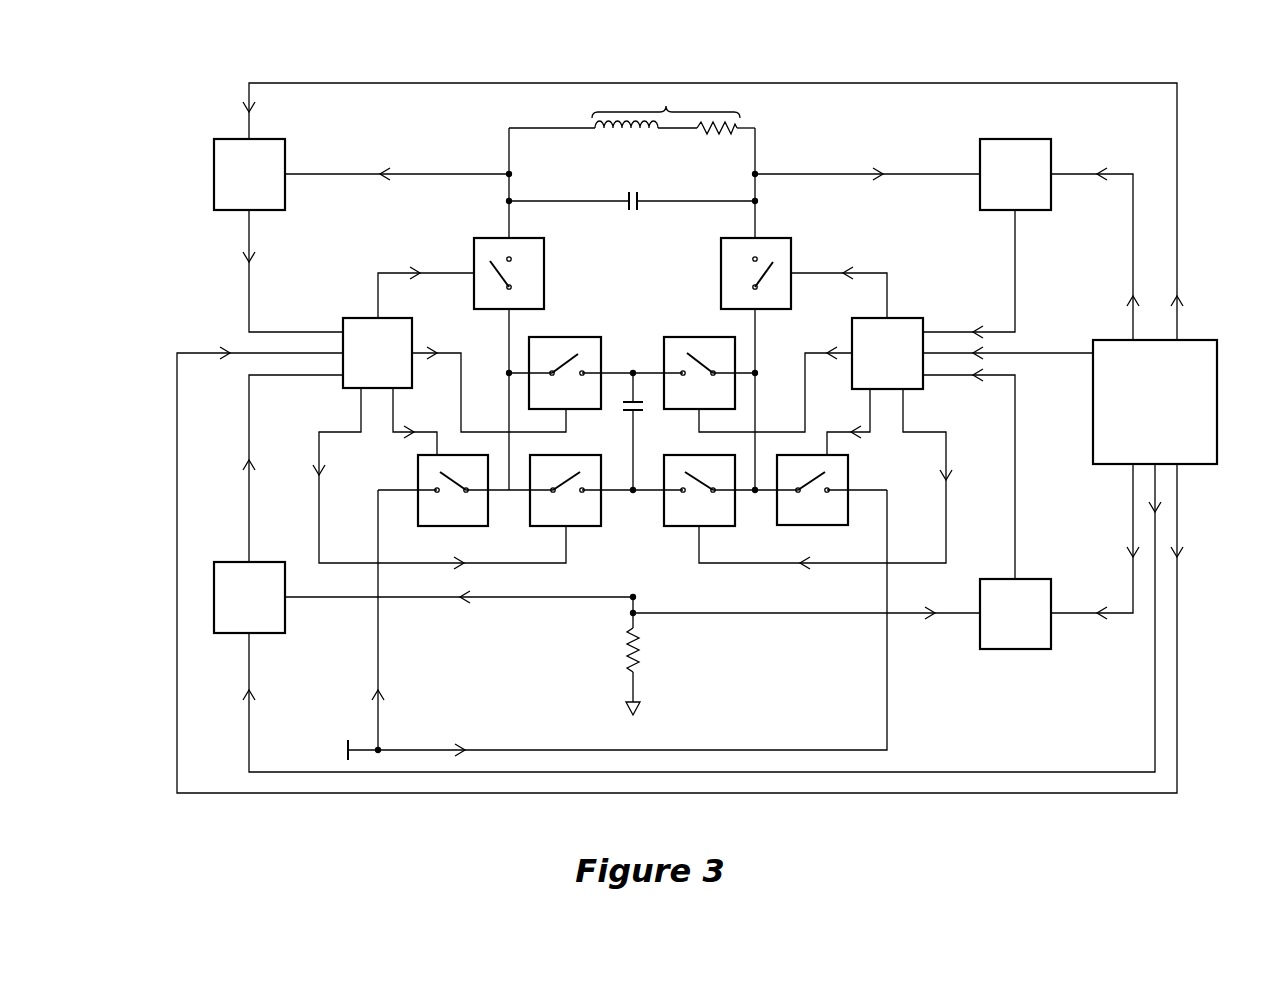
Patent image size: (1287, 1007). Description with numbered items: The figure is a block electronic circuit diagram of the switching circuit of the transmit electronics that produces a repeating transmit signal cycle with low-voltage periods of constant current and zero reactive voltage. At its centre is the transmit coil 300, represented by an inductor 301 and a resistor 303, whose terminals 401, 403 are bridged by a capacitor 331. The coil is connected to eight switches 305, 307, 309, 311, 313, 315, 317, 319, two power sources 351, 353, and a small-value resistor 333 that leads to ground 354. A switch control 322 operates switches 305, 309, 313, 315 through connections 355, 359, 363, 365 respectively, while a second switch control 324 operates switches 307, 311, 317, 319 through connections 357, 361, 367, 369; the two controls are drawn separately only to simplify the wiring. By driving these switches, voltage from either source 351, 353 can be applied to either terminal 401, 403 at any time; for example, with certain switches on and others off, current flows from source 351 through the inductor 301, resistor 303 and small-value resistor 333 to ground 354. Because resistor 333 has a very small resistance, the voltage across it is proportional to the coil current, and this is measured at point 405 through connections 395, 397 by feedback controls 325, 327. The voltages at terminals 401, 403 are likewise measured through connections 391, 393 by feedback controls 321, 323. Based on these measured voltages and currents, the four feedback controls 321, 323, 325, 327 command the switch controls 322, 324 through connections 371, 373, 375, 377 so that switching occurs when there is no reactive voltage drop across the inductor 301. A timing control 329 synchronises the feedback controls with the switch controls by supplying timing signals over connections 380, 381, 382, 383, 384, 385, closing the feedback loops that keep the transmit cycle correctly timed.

The transmit coil 300 is at (666, 106).
The inductor 301 is at (600, 134).
The resistor 303 is at (712, 134).
The switch 305 is at (544, 270).
The switch 307 is at (721, 262).
The switch 309 is at (546, 400).
The switch 311 is at (680, 400).
The switch 313 is at (434, 518).
The switch 315 is at (547, 518).
The switch 317 is at (680, 518).
The switch 319 is at (793, 518).
The feedback control 321 is at (230, 187).
The switch control 322 is at (358, 366).
The feedback control 323 is at (996, 187).
The switch control 324 is at (868, 366).
The feedback control 325 is at (230, 610).
The feedback control 327 is at (996, 626).
The timing control 329 is at (1136, 415).
The capacitor 331 is at (633, 206).
The small-value resistor 333 is at (640, 650).
The power source 351 is at (626, 404).
The power source 353 is at (346, 748).
The ground 354 is at (640, 712).
The connection 355 is at (400, 273).
The connection 357 is at (887, 292).
The connection 359 is at (450, 352).
The connection 361 is at (807, 352).
The connection 363 is at (398, 432).
The connection 365 is at (319, 455).
The connection 367 is at (790, 563).
The connection 369 is at (862, 432).
The connection 371 is at (249, 290).
The connection 373 is at (1015, 290).
The connection 375 is at (249, 452).
The connection 377 is at (1015, 445).
The connection 380 is at (1035, 353).
The connection 381 is at (195, 353).
The connection 382 is at (1133, 598).
The connection 383 is at (1155, 532).
The connection 384 is at (1133, 285).
The connection 385 is at (1177, 285).
The connection 391 is at (405, 173).
The connection 393 is at (870, 173).
The connection 395 is at (498, 600).
The connection 397 is at (795, 614).
The terminal 401 is at (509, 172).
The terminal 403 is at (755, 172).
The point 405 is at (636, 612).